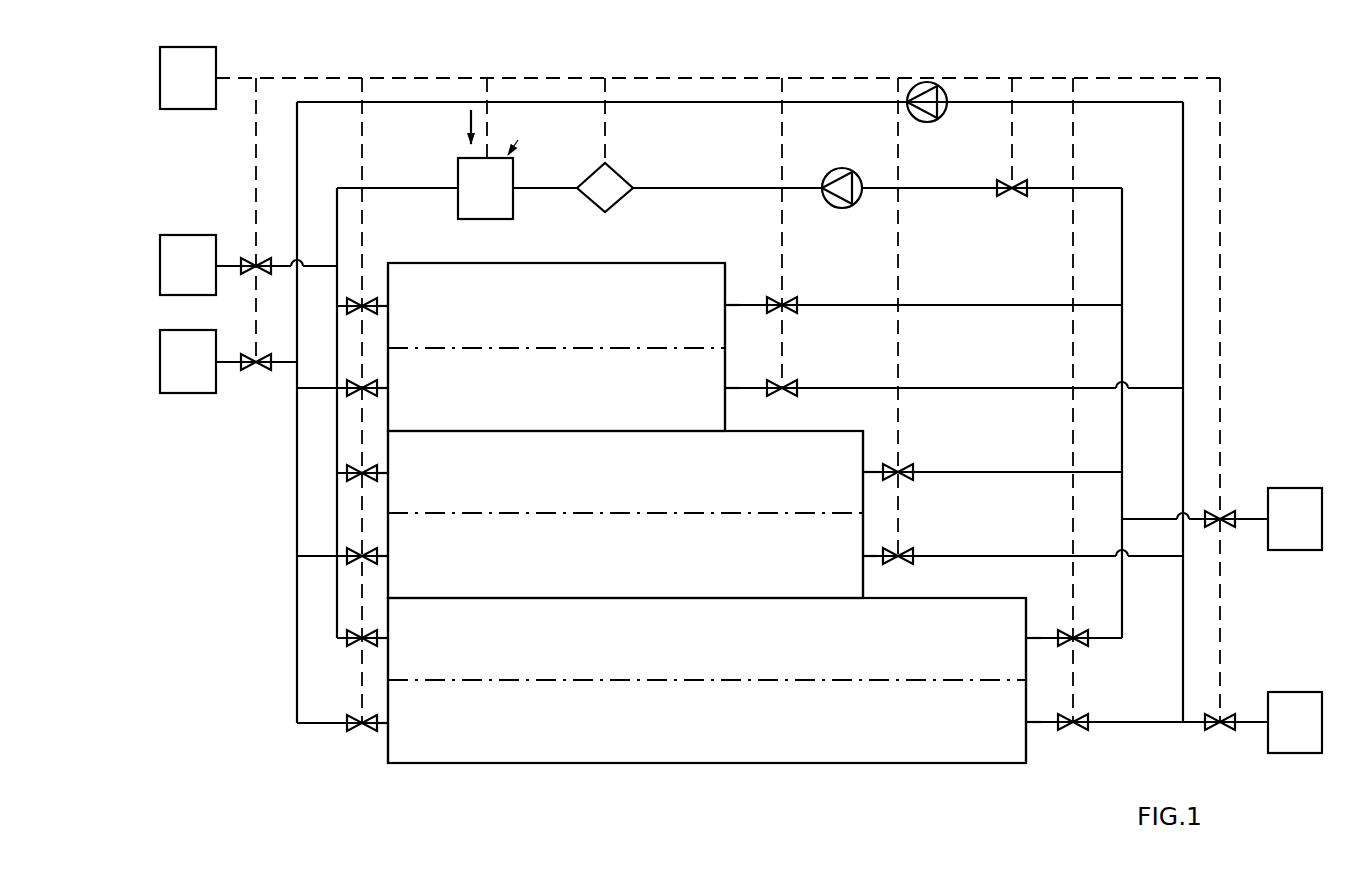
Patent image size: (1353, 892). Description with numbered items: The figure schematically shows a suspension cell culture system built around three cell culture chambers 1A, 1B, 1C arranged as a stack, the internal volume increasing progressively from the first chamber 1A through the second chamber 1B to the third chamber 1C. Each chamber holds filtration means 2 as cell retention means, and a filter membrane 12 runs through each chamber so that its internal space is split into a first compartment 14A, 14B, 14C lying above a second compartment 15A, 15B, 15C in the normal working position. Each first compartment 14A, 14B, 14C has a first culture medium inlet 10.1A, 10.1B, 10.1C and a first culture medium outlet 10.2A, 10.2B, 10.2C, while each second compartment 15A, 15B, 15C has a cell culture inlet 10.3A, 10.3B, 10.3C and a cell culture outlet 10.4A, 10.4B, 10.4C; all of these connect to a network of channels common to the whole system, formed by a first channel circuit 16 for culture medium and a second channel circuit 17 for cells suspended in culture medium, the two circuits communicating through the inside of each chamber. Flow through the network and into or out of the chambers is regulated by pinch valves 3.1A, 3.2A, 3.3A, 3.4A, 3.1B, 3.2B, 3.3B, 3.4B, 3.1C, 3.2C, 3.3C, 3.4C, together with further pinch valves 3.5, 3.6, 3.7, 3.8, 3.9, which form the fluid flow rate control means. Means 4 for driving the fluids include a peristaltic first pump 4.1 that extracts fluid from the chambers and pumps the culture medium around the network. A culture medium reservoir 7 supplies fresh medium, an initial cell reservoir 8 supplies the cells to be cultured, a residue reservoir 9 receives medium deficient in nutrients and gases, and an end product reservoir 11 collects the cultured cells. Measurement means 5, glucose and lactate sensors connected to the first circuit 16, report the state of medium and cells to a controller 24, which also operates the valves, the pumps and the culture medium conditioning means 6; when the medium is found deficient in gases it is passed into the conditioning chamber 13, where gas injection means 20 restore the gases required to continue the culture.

The first cell culture chamber 1A is at (684, 262).
The second cell culture chamber 1B is at (866, 446).
The third cell culture chamber 1C is at (836, 765).
The filtration means 2 is at (549, 343).
The filter membrane 12 is at (502, 350).
The first compartment 14A is at (556, 305).
The first compartment 14B is at (625, 472).
The first compartment 14C is at (707, 639).
The second compartment 15A is at (556, 389).
The second compartment 15B is at (625, 555).
The second compartment 15C is at (707, 721).
The first culture medium inlet 10.1A is at (390, 306).
The first culture medium outlet 10.2A is at (724, 305).
The cell culture inlet 10.3A is at (390, 388).
The cell culture outlet 10.4A is at (724, 388).
The first culture medium inlet 10.1B is at (390, 473).
The first culture medium outlet 10.2B is at (862, 472).
The cell culture inlet 10.3B is at (390, 556).
The cell culture outlet 10.4B is at (862, 556).
The first culture medium inlet 10.1C is at (390, 638).
The first culture medium outlet 10.2C is at (1025, 638).
The cell culture inlet 10.3C is at (390, 723).
The cell culture outlet 10.4C is at (1025, 722).
The pinch valve 3.1A is at (374, 300).
The pinch valve 3.2A is at (790, 312).
The pinch valve 3.3A is at (355, 395).
The pinch valve 3.4A is at (790, 395).
The pinch valve 3.1B is at (355, 479).
The pinch valve 3.2B is at (906, 479).
The pinch valve 3.3B is at (355, 562).
The pinch valve 3.4B is at (906, 563).
The pinch valve 3.1C is at (355, 644).
The pinch valve 3.2C is at (1081, 645).
The pinch valve 3.3C is at (355, 728).
The pinch valve 3.4C is at (1081, 729).
The pinch valve 3.5 is at (256, 260).
The pinch valve 3.6 is at (255, 370).
The pinch valve 3.7 is at (1003, 186).
The pinch valve 3.8 is at (1226, 511).
The pinch valve 3.9 is at (1226, 714).
The means for driving fluids 4 is at (925, 122).
The first pump 4.1 is at (856, 175).
The measurement means 5 is at (605, 187).
The culture medium conditioning means 6 is at (519, 139).
The culture medium reservoir 7 is at (188, 265).
The initial cell reservoir 8 is at (188, 361).
The residue reservoir 9 is at (1295, 519).
The end product reservoir 11 is at (1295, 722).
The conditioning chamber 13 is at (485, 188).
The first channel circuit 16 is at (1122, 212).
The second channel circuit 17 is at (1183, 295).
The gas injection means 20 is at (466, 117).
The controller 24 is at (690, 385).